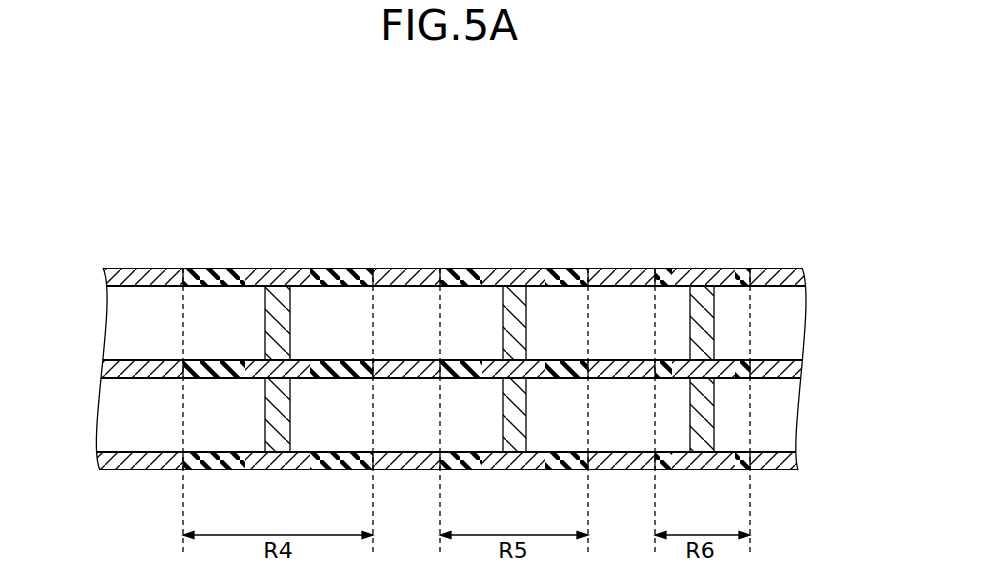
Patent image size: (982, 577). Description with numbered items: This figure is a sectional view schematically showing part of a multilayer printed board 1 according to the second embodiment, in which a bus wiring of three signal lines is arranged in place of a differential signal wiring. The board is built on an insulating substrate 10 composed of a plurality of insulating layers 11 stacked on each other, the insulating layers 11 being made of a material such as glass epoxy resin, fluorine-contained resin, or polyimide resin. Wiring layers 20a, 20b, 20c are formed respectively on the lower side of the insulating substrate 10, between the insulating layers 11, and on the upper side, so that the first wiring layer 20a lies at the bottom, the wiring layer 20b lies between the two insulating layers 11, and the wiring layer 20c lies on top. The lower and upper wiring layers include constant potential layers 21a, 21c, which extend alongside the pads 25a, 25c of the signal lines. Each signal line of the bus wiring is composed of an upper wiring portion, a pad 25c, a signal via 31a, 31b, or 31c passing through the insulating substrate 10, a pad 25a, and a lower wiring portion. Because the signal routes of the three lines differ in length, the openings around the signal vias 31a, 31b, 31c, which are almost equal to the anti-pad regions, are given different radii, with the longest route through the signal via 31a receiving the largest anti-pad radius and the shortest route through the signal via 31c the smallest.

The multilayer printed board 1 is at (766, 150).
The insulating substrate 10 is at (852, 303).
The insulating layer 11 is at (778, 319).
The first wiring layer 20a is at (101, 459).
The wiring layer 20b is at (103, 367).
The wiring layer 20c is at (103, 272).
The constant potential layer 21a is at (783, 471).
The constant potential layer 21c is at (782, 241).
The pad 25a is at (282, 471).
The pad 25c is at (272, 273).
The signal via 31a is at (279, 322).
The signal via 31b is at (514, 322).
The signal via 31c is at (702, 322).